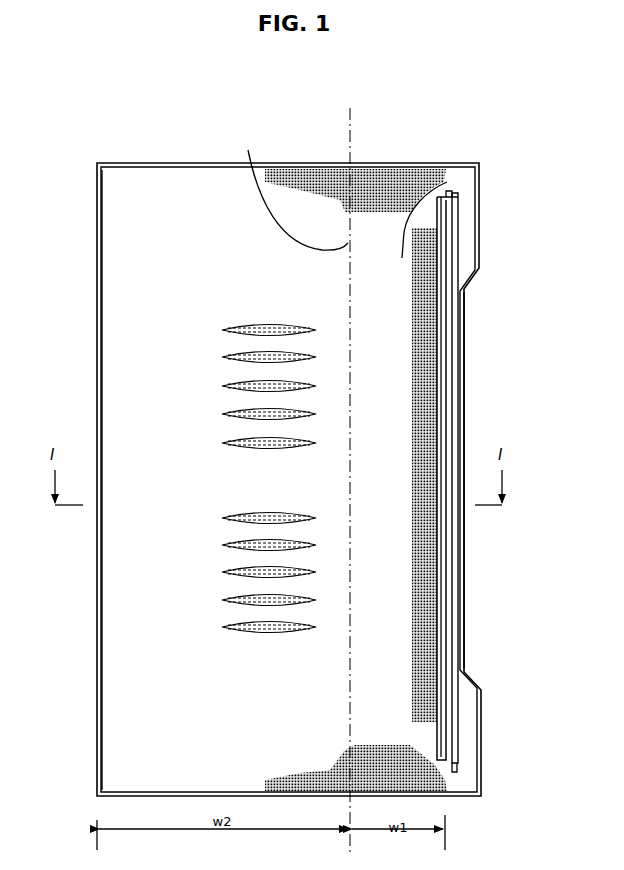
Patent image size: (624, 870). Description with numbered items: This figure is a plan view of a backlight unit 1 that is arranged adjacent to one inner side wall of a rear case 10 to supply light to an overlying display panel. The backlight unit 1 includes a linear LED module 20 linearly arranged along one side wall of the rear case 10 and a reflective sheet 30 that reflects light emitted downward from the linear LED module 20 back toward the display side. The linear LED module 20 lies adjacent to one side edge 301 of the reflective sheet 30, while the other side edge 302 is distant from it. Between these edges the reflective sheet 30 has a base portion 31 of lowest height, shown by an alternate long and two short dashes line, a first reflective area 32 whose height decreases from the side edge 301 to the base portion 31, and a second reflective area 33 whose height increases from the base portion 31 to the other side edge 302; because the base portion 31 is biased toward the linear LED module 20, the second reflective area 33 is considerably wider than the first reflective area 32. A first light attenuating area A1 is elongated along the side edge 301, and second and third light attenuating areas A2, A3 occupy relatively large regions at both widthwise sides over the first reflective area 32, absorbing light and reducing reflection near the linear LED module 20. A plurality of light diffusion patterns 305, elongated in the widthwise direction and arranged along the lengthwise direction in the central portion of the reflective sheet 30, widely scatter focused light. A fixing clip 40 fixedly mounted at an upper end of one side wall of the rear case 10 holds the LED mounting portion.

The backlight unit 1 is at (441, 61).
The rear case 10 is at (481, 762).
The linear LED module 20 is at (445, 640).
The reflective sheet 30 is at (272, 461).
The base portion 31 is at (292, 190).
The first reflective area 32 is at (450, 192).
The second reflective area 33 is at (170, 507).
The fixing clip 40 is at (460, 428).
The side edge 301 is at (441, 234).
The other side edge 302 is at (100, 243).
The light diffusion patterns 305 is at (248, 628).
The first light attenuating area A1 is at (433, 562).
The second light attenuating area A2 is at (396, 180).
The third light attenuating area A3 is at (438, 778).